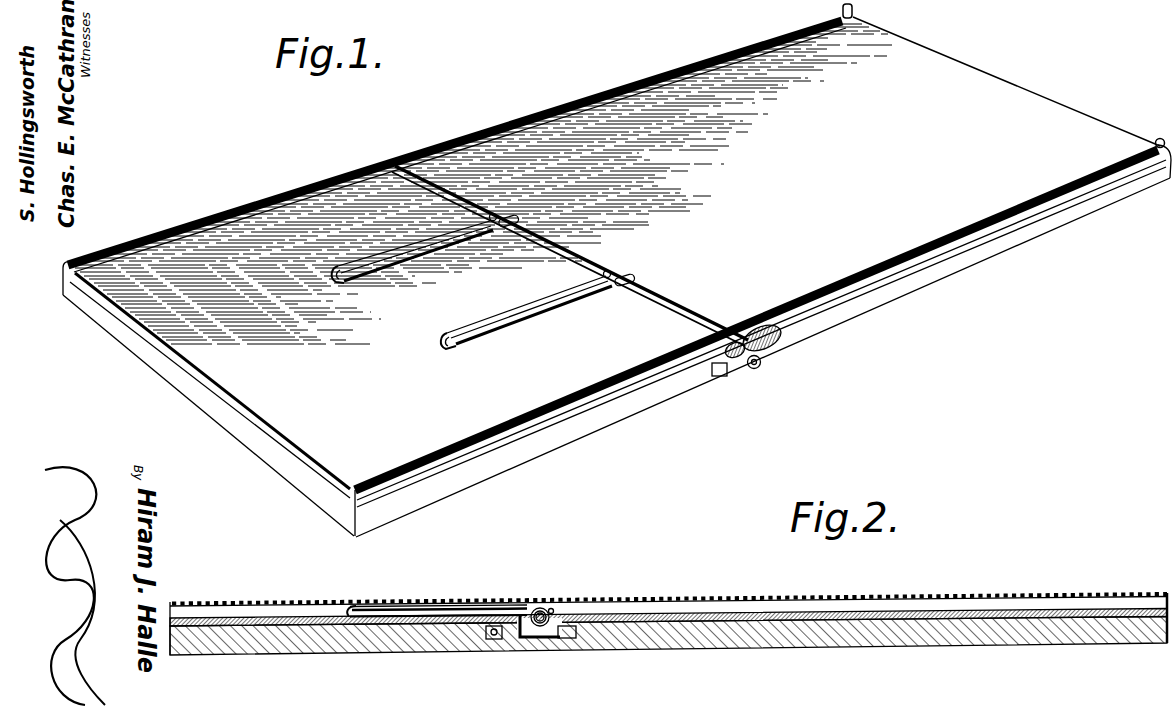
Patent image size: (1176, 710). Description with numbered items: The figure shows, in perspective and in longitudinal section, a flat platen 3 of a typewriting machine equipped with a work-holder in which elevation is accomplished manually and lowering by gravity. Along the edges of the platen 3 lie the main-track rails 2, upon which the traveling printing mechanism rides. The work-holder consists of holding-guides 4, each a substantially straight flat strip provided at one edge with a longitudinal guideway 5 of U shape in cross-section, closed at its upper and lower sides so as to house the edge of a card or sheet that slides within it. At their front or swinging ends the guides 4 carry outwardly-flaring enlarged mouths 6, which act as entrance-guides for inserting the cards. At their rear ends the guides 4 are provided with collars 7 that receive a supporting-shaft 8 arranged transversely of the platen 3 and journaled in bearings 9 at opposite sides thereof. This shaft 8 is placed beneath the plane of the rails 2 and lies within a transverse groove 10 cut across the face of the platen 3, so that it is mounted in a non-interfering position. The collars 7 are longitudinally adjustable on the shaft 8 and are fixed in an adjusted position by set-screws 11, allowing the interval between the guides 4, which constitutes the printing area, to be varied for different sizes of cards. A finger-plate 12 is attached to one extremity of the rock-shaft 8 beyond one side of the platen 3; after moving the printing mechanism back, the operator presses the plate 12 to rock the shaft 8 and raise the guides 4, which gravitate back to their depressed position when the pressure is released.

In FIG. 1, the main-track rails 2 is at (510, 130).
In FIG. 2, the main-track rails 2 is at (273, 606).
In FIG. 1, the flat platen 3 is at (617, 270).
In FIG. 2, the flat platen 3 is at (218, 617).
In FIG. 1, the holding-guides 4 is at (409, 245).
In FIG. 2, the holding-guides 4 is at (463, 607).
In FIG. 1, the longitudinal guideway 5 is at (368, 282).
In FIG. 2, the longitudinal guideway 5 is at (407, 610).
In FIG. 1, the outwardly-flaring enlarged mouths 6 is at (343, 266).
In FIG. 2, the outwardly-flaring enlarged mouths 6 is at (352, 606).
In FIG. 1, the collars 7 is at (503, 223).
In FIG. 2, the collars 7 is at (533, 607).
In FIG. 1, the supporting-shaft 8 is at (552, 250).
In FIG. 2, the supporting-shaft 8 is at (540, 624).
In FIG. 1, the bearings 9 is at (730, 378).
In FIG. 2, the bearings 9 is at (488, 641).
In FIG. 1, the transverse groove 10 is at (689, 313).
In FIG. 2, the transverse groove 10 is at (557, 639).
In FIG. 1, the set-screws 11 is at (495, 213).
In FIG. 2, the set-screws 11 is at (554, 612).
In FIG. 1, the finger-plate 12 is at (782, 343).